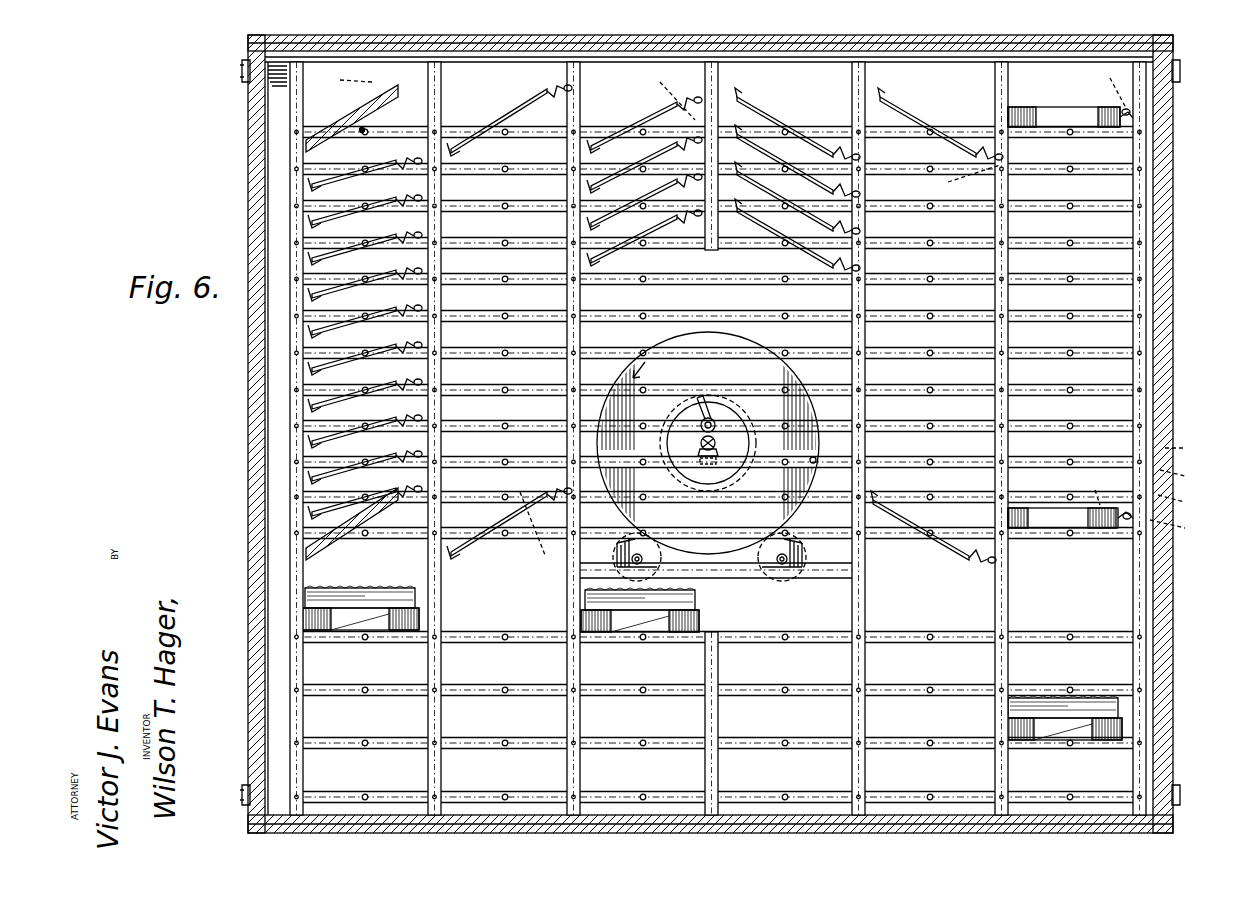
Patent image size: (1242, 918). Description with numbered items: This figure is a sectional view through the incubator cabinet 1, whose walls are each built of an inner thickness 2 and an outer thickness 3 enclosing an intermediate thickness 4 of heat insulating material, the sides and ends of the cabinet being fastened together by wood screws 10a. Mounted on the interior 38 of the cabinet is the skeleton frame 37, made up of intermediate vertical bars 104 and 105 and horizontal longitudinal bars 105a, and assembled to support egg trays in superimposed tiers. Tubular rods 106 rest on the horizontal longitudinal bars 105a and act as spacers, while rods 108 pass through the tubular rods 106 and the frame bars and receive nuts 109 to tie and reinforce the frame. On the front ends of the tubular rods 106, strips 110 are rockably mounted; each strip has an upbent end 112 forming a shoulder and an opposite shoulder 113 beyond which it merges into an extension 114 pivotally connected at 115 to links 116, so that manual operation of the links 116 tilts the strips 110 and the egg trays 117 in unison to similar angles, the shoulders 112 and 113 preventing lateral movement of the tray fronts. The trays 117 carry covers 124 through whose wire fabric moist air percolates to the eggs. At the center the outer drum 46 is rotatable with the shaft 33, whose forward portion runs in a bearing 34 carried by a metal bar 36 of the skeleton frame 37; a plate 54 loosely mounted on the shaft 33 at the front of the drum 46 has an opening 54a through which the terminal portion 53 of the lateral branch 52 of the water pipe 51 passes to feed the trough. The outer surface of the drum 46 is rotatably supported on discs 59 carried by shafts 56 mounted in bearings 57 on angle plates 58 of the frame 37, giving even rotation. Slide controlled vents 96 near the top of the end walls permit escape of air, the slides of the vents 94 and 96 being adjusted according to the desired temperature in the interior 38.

The incubator cabinet 1 is at (1190, 449).
The inner thickness 2 is at (1188, 476).
The outer thickness 3 is at (1187, 502).
The intermediate thickness 4 is at (1183, 527).
The wood screws 10a is at (250, 47).
The shaft 33 is at (716, 443).
The bearing 34 is at (698, 452).
The metal bar 36 is at (697, 449).
The skeleton frame 37 is at (428, 574).
The interior of the cabinet 38 is at (268, 442).
The outer drum 46 is at (752, 340).
The pipe 51 is at (816, 462).
The lateral branch 52 is at (776, 455).
The terminal portion 53 is at (705, 466).
The plate 54 is at (695, 405).
The opening 54a is at (720, 418).
The shafts 56 is at (630, 558).
The bearings 57 is at (628, 548).
The angle plates 58 is at (725, 580).
The discs 59 is at (645, 550).
The vents 94 is at (243, 792).
The slide controlled vents 96 is at (243, 72).
The intermediate vertical bars 104 is at (290, 330).
The vertical bars 105 is at (440, 333).
The horizontal longitudinal bars 105a is at (1104, 200).
The tubular rods 106 is at (358, 138).
The rods 108 is at (355, 120).
The nuts 109 is at (920, 318).
The strips 110 is at (400, 100).
The upbent end 112 is at (305, 150).
The shoulder 113 is at (733, 307).
The extension 114 is at (545, 96).
The pivotal connection 115 is at (418, 78).
The links 116 is at (568, 95).
The egg trays 117 is at (300, 103).
The covers 124 is at (420, 598).